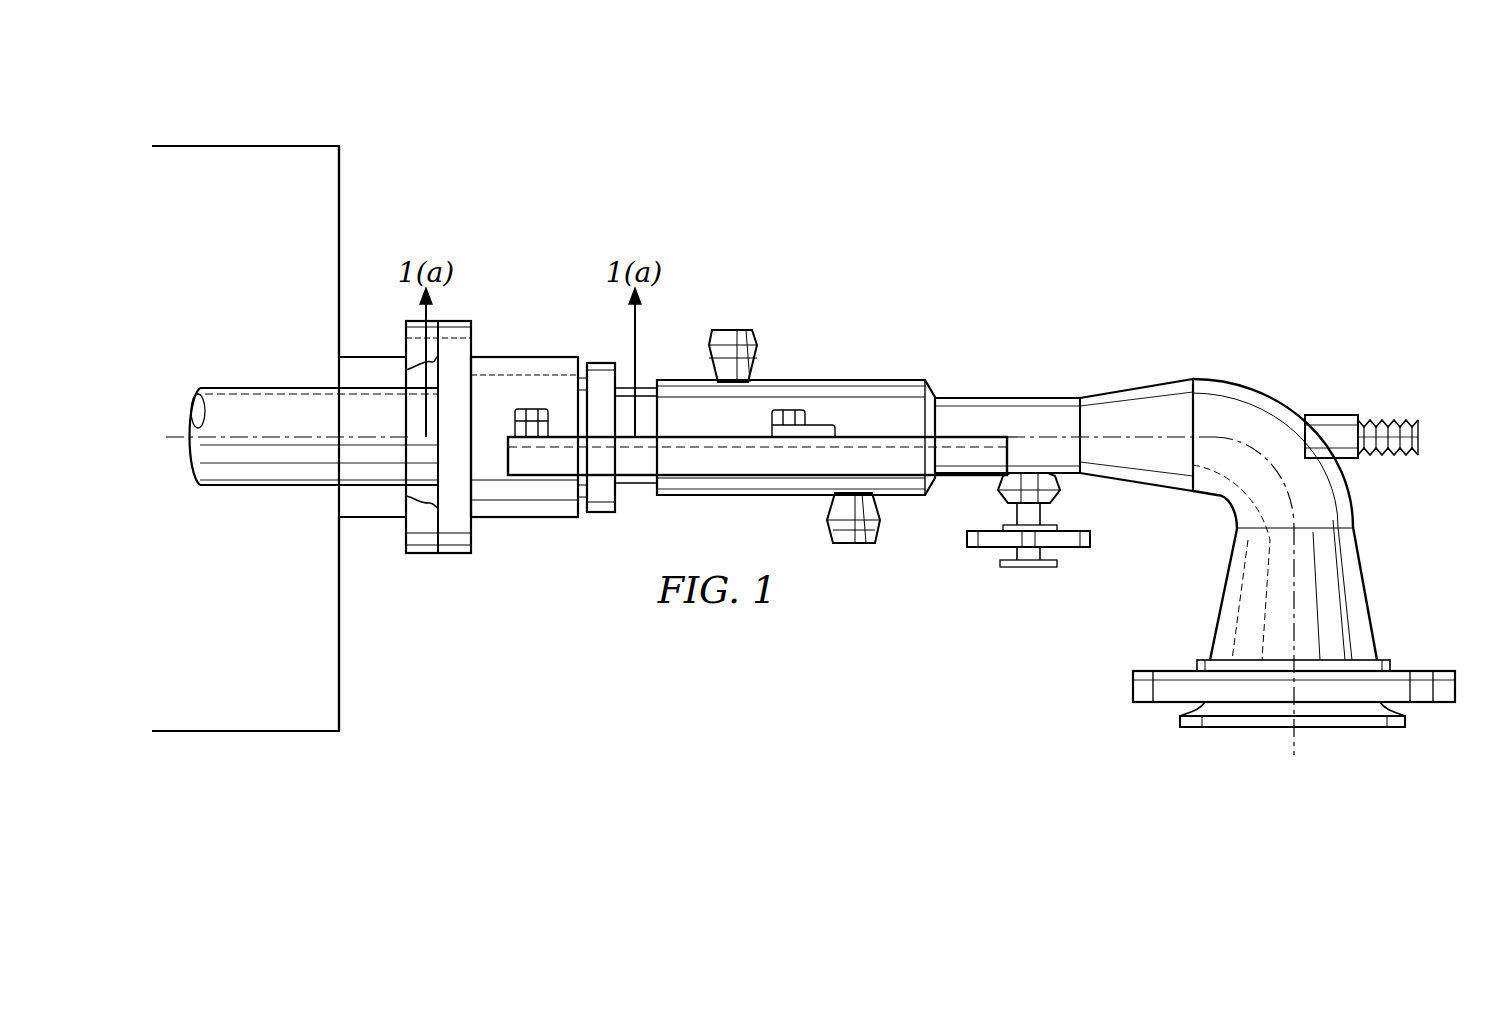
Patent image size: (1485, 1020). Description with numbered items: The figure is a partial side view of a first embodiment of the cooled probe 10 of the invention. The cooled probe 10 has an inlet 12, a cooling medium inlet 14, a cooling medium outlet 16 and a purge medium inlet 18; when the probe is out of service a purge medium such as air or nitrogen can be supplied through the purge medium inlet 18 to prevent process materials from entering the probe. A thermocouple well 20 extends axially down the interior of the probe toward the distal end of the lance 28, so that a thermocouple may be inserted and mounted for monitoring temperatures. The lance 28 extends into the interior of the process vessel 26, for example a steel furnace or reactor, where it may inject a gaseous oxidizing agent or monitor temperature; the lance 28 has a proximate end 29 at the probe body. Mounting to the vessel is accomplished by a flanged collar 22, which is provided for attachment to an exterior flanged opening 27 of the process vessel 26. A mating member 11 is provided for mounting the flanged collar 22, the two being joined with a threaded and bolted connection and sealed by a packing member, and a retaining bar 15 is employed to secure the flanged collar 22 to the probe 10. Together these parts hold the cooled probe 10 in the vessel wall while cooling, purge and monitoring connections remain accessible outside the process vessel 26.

The cooled probe 10 is at (980, 305).
The mating member 11 is at (600, 512).
The inlet 12 is at (1343, 727).
The cooling medium inlet 14 is at (863, 545).
The retaining bar 15 is at (722, 477).
The cooling medium outlet 16 is at (742, 330).
The purge medium inlet 18 is at (1032, 568).
The thermocouple well 20 is at (1337, 415).
The flanged collar 22 is at (475, 524).
The process vessel 26 is at (218, 146).
The exterior flanged opening 27 is at (418, 553).
The lance 28 is at (236, 356).
The proximate end 29 is at (642, 487).